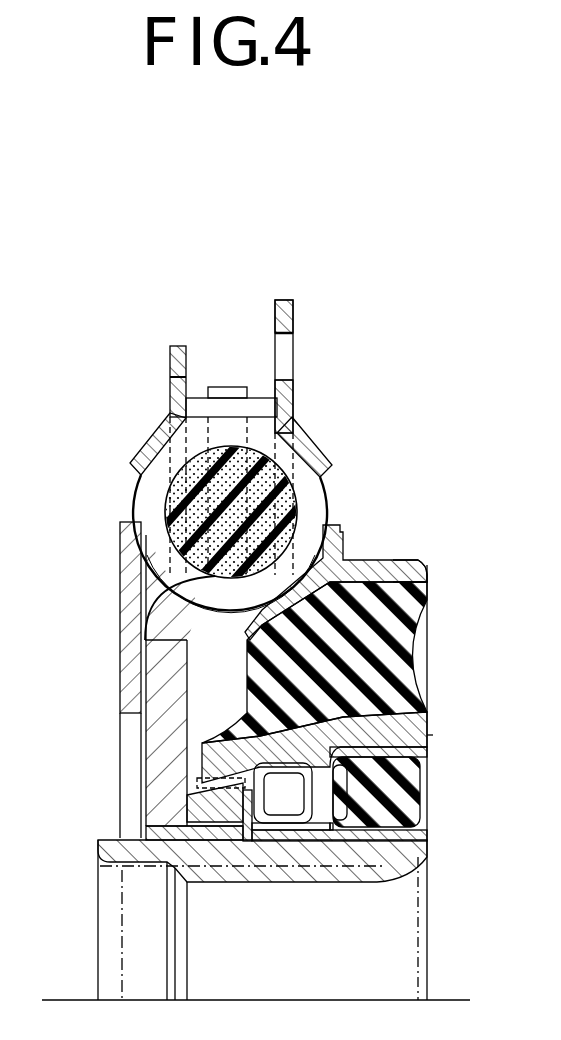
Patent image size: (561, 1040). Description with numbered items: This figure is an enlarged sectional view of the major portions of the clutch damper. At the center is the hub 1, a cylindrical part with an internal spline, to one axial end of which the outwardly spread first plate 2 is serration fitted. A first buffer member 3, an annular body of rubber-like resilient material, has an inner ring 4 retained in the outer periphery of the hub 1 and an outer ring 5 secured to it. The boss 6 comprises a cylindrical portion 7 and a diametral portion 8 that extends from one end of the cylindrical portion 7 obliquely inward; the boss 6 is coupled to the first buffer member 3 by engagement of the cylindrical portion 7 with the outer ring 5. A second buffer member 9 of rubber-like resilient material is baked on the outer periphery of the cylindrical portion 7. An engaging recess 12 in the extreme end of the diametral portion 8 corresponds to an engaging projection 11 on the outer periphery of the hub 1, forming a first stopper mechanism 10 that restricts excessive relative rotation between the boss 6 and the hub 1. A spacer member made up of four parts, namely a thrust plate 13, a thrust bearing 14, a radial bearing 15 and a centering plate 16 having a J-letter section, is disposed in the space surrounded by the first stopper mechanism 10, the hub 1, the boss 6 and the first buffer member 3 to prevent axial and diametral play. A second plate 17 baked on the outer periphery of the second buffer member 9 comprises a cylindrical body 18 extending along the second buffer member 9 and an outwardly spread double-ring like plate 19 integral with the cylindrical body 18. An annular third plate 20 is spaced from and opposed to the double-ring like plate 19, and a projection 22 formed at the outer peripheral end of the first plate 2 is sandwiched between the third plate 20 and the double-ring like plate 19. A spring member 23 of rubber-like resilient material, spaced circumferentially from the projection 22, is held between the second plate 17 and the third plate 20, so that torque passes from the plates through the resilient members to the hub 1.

The hub 1 is at (357, 857).
The first plate 2 is at (160, 685).
The first buffer member 3 is at (403, 778).
The inner ring 4 is at (407, 838).
The outer ring 5 is at (428, 751).
The boss 6 is at (432, 733).
The cylindrical portion 7 is at (427, 710).
The diametral portion 8 is at (198, 806).
The second buffer member 9 is at (403, 640).
The first stopper mechanism 10 is at (212, 803).
The engaging projection 11 is at (215, 812).
The engaging recess 12 is at (210, 783).
The thrust plate 13 is at (247, 841).
The thrust bearing 14 is at (249, 842).
The radial bearing 15 is at (281, 841).
The centering plate 16 is at (304, 841).
The second plate 17 is at (333, 540).
The cylindrical body 18 is at (417, 570).
The double-ring like plate 19 is at (283, 398).
The third plate 20 is at (177, 375).
The projection 22 is at (227, 396).
The spring member 23 is at (183, 503).